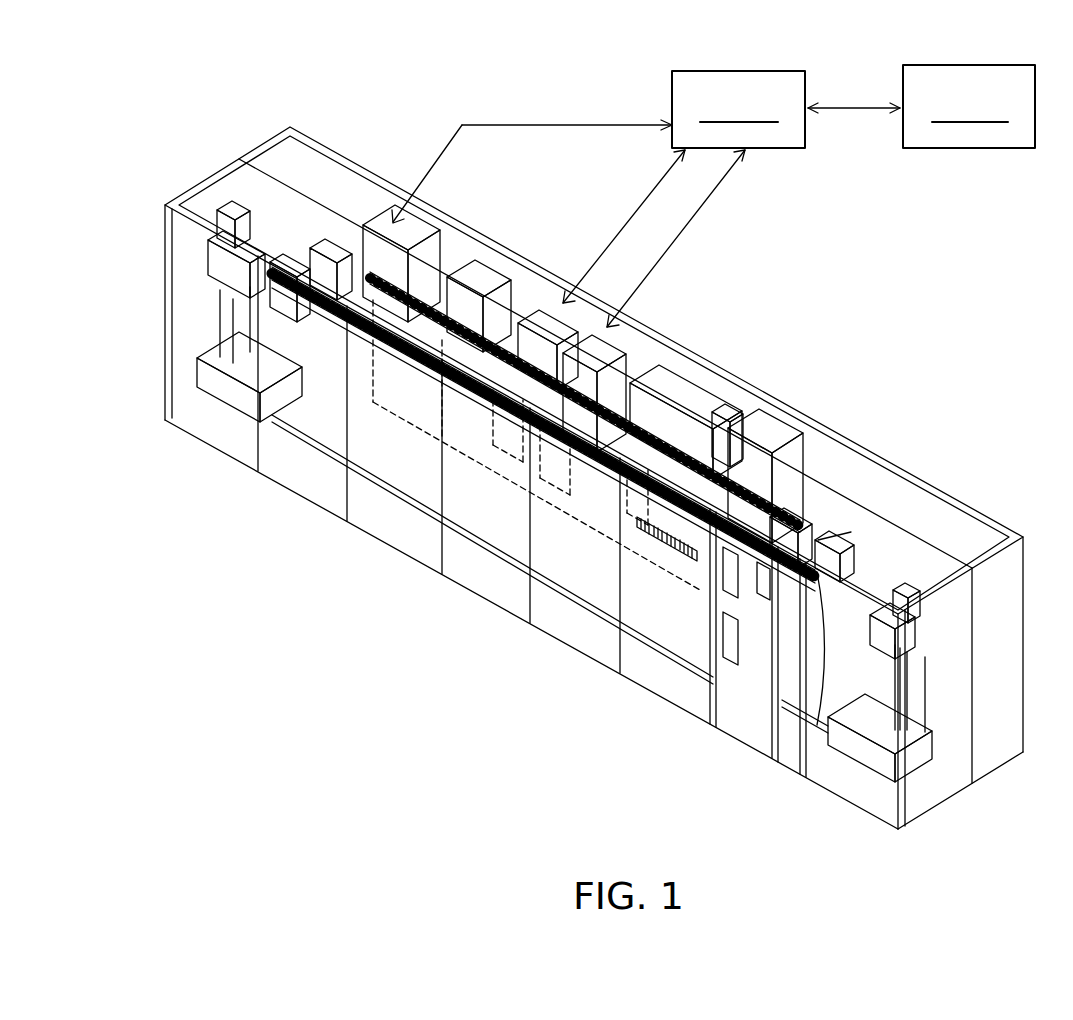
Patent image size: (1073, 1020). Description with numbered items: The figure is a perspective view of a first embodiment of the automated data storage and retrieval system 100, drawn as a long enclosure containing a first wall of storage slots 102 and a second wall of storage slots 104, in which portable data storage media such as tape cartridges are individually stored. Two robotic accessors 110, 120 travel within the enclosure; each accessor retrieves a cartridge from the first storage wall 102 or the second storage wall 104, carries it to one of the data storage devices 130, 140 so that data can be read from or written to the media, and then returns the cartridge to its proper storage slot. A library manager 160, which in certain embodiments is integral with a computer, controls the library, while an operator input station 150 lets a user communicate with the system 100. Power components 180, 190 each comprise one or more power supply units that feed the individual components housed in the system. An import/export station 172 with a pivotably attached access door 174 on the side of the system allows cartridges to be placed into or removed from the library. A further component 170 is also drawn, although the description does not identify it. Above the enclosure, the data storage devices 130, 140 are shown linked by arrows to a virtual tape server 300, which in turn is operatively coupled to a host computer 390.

The automated data storage and retrieval system 100 is at (650, 750).
The first wall of storage slots 102 is at (480, 240).
The second wall of storage slots 104 is at (383, 440).
The accessor 110 is at (212, 262).
The accessor 120 is at (925, 640).
The data storage device 130 is at (543, 313).
The data storage device 140 is at (598, 330).
The operator input station 150 is at (505, 277).
The library manager 160 is at (430, 232).
The rail 170 is at (478, 535).
The import/export station 172 is at (773, 690).
The access door 174 is at (740, 665).
The power component 180 is at (835, 535).
The power component 190 is at (818, 700).
The virtual tape server 300 is at (598, 199).
The host computer 390 is at (921, 106).